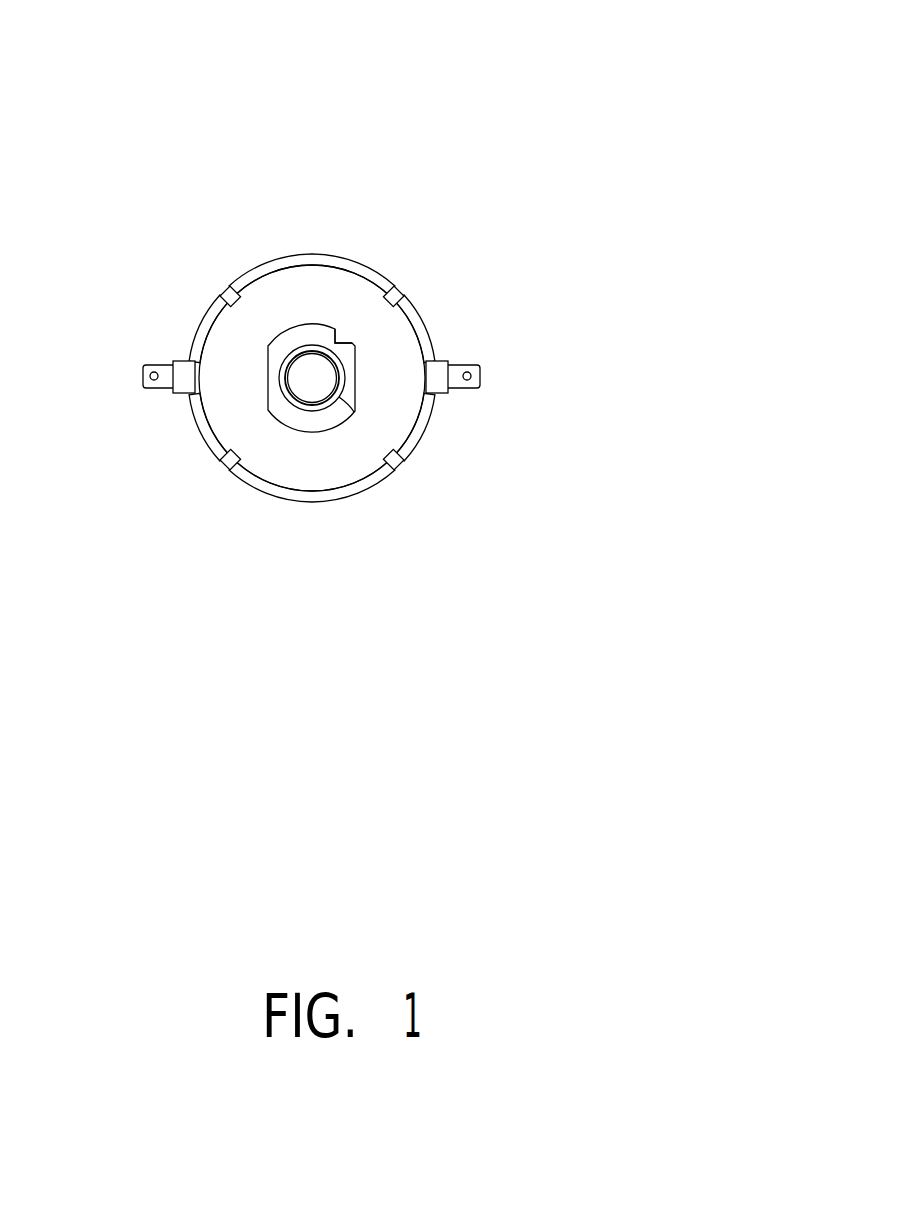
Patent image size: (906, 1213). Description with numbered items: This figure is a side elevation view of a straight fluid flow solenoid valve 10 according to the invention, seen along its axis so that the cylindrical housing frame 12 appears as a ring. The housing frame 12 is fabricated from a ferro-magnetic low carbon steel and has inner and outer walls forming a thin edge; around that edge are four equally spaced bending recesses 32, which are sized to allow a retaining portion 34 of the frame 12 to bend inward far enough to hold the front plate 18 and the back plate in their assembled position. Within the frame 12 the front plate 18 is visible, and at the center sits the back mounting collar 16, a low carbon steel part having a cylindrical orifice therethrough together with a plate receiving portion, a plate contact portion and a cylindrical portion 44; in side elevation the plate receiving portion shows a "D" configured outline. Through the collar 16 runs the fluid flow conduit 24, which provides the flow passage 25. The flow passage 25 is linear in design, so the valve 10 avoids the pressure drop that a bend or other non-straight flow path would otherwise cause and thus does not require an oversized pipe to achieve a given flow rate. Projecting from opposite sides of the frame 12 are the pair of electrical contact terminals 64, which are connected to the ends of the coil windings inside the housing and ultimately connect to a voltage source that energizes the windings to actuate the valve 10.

The straight fluid flow solenoid valve 10 is at (442, 131).
The housing frame 12 is at (337, 253).
The back mounting collar 16 is at (300, 337).
The front plate 18 is at (248, 313).
The fluid flow conduit 24 is at (303, 407).
The flow passage 25 is at (311, 374).
The bending recesses 32 is at (222, 287).
The retaining portion 34 is at (360, 260).
The cylindrical portion 44 is at (353, 413).
The electrical contact terminals 64 is at (160, 365).